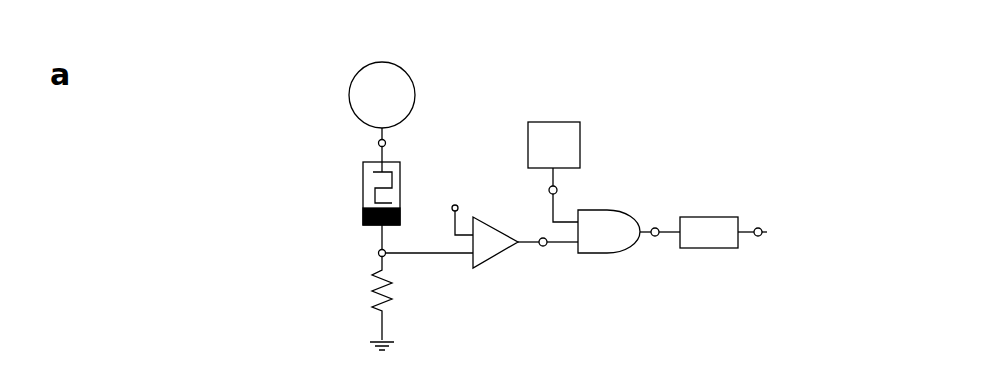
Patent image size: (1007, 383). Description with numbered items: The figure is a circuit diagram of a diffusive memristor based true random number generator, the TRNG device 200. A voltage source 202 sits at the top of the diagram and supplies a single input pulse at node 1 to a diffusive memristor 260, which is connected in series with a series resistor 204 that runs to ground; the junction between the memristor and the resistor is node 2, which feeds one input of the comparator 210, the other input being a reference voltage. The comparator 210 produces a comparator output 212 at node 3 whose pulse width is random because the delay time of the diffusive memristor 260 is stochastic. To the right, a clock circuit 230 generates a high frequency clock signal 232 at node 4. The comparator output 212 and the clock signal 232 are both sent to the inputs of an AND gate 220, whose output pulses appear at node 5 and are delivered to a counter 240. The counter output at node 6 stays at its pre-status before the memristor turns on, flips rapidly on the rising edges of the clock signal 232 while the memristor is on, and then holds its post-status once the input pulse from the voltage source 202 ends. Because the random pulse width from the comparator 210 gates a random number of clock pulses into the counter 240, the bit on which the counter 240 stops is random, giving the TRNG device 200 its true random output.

The TRNG device 200 is at (577, 198).
The voltage source 202 is at (390, 60).
The series resistor 204 is at (362, 298).
The comparator 210 is at (490, 265).
The comparator output 212 is at (609, 305).
The AND gate 220 is at (608, 260).
The clock circuit 230 is at (553, 118).
The clock signal 232 is at (651, 179).
The counter 240 is at (723, 217).
The diffusive memristor 260 is at (358, 190).
The node 1 is at (385, 141).
The node 2 is at (385, 256).
The node 3 is at (545, 248).
The node 4 is at (557, 188).
The node 5 is at (655, 237).
The node 6 is at (757, 238).